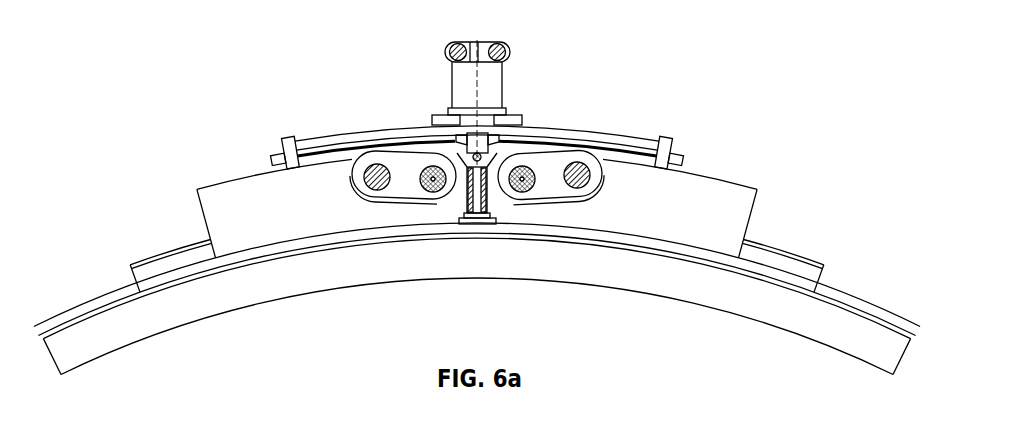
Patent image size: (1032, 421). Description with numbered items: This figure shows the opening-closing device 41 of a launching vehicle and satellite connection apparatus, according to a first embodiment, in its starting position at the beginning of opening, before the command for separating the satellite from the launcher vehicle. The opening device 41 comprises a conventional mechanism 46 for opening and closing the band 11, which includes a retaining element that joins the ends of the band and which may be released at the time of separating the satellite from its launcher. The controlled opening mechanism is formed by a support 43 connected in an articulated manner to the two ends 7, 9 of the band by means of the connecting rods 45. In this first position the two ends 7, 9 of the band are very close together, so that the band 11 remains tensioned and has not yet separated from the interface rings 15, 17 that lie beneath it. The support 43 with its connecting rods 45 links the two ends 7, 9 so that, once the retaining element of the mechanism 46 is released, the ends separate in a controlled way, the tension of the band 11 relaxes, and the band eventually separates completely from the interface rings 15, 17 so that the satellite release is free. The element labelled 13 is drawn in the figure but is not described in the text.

The end of the band 7 is at (407, 212).
The end of the band 9 is at (571, 212).
The band 11 is at (729, 193).
The support block 13 is at (771, 262).
The interface ring 15 is at (477, 279).
The interface ring 17 is at (862, 310).
The opening-closing device 41 is at (192, 103).
The support 43 is at (610, 143).
The connecting rods 45 is at (363, 185).
The conventional mechanism 46 is at (520, 40).